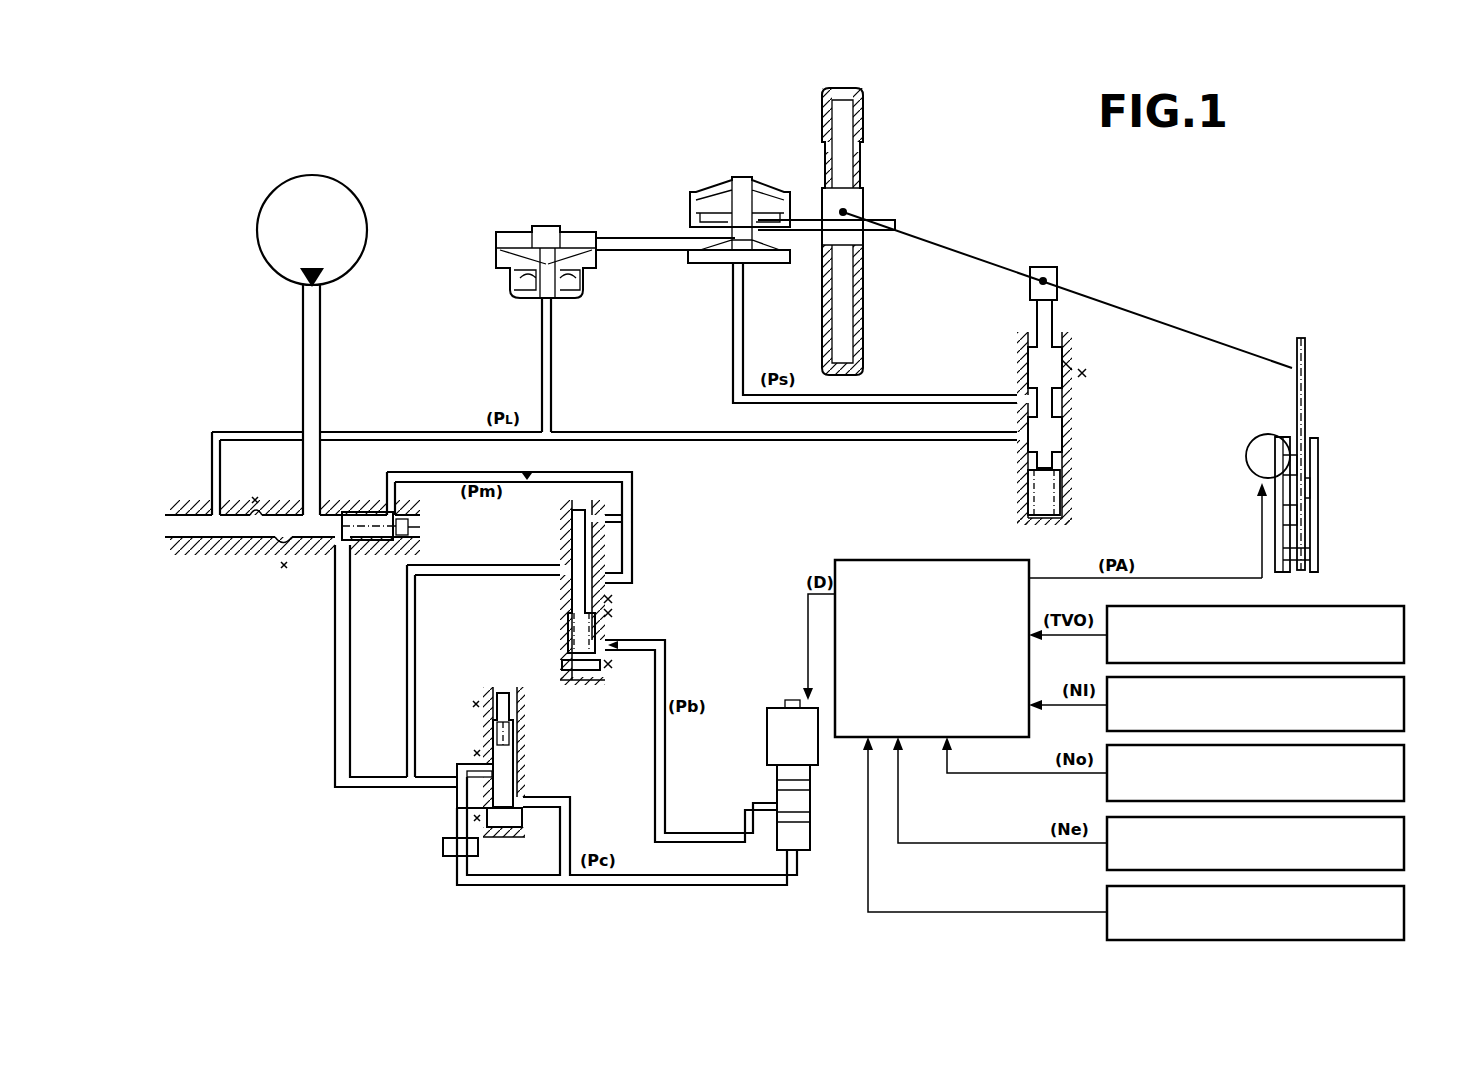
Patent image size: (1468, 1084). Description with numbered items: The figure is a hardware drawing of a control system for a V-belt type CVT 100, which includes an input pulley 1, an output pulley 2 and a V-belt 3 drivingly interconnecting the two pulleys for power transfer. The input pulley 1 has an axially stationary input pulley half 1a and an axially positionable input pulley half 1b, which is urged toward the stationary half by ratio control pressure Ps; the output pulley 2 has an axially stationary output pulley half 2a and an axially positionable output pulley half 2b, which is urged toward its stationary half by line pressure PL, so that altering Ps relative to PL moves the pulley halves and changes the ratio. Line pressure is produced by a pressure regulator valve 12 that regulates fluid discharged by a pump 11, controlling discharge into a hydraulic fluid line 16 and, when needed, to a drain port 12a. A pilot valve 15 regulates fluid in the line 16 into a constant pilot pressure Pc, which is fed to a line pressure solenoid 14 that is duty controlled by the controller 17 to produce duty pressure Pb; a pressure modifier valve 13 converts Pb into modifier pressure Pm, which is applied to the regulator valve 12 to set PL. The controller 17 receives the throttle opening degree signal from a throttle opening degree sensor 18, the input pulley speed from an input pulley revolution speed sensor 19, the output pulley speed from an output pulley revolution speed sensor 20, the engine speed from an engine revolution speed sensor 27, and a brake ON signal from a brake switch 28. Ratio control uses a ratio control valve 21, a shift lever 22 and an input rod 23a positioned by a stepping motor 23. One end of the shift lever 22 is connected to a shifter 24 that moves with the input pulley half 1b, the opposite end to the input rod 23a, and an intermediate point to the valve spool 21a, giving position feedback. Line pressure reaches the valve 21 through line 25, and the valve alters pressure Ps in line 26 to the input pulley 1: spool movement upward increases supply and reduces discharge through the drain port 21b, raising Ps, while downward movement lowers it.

The V-belt type CVT 100 is at (582, 175).
The input pulley 1 is at (791, 213).
The axially stationary input pulley half 1a is at (780, 263).
The axially positionable input pulley half 1b is at (770, 230).
The output pulley 2 is at (511, 275).
The axially stationary output pulley half 2a is at (510, 232).
The axially positionable output pulley half 2b is at (497, 262).
The V-belt 3 is at (632, 238).
The pump 11 is at (313, 175).
The pressure regulator valve 12 is at (292, 574).
The drain port 12a is at (296, 562).
The pressure modifier valve 13 is at (622, 624).
The line pressure solenoid 14 is at (767, 748).
The pilot valve 15 is at (540, 738).
The hydraulic fluid line 16 is at (403, 753).
The controller 17 is at (943, 560).
The throttle opening degree sensor 18 is at (1405, 636).
The input pulley revolution speed sensor 19 is at (1405, 702).
The output pulley revolution speed sensor 20 is at (1405, 776).
The ratio control valve 21 is at (1090, 362).
The valve spool 21a is at (1050, 262).
The drain port 21b is at (1082, 373).
The shift lever 22 is at (1140, 317).
The stepping motor 23 is at (1262, 440).
The input rod 23a is at (1287, 383).
The shifter 24 is at (865, 202).
The line 25 is at (882, 442).
The line 26 is at (948, 395).
The engine revolution speed sensor 27 is at (1405, 844).
The brake switch 28 is at (1405, 913).